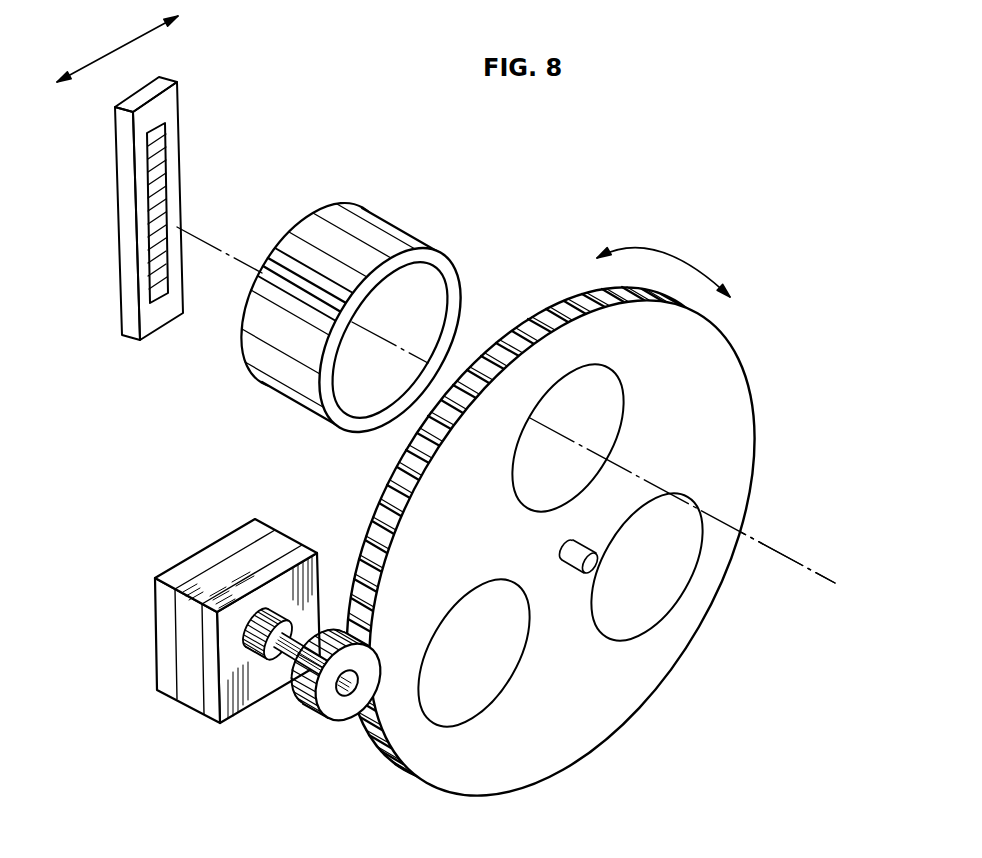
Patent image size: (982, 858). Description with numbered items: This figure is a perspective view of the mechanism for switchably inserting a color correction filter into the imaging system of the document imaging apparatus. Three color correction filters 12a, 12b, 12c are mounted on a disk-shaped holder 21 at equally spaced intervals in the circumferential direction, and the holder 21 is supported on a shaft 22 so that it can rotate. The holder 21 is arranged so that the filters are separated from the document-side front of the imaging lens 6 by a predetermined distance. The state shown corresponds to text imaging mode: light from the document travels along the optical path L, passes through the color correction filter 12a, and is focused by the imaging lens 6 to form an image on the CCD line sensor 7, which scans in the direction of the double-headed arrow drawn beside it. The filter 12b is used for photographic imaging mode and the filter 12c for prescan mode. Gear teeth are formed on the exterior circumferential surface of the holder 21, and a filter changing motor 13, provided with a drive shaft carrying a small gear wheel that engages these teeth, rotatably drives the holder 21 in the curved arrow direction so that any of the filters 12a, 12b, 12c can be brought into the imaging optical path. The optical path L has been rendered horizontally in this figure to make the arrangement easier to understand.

The CCD line sensor 7 is at (177, 107).
The imaging lens 6 is at (366, 236).
The disk-shaped holder 21 is at (723, 428).
The color correction filter 12a is at (602, 395).
The color correction filter 12b is at (653, 603).
The color correction filter 12c is at (450, 700).
The shaft 22 is at (575, 558).
The filter changing motor 13 is at (255, 690).
The optical path L is at (768, 542).